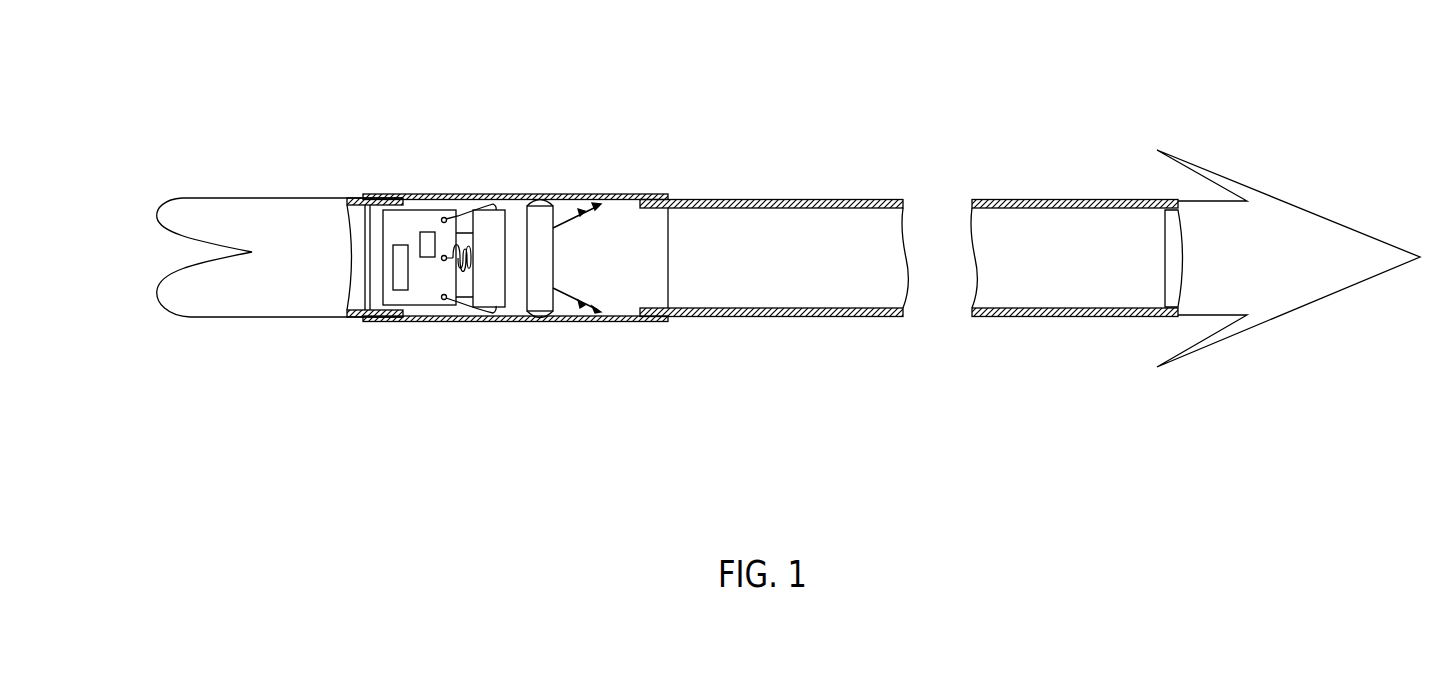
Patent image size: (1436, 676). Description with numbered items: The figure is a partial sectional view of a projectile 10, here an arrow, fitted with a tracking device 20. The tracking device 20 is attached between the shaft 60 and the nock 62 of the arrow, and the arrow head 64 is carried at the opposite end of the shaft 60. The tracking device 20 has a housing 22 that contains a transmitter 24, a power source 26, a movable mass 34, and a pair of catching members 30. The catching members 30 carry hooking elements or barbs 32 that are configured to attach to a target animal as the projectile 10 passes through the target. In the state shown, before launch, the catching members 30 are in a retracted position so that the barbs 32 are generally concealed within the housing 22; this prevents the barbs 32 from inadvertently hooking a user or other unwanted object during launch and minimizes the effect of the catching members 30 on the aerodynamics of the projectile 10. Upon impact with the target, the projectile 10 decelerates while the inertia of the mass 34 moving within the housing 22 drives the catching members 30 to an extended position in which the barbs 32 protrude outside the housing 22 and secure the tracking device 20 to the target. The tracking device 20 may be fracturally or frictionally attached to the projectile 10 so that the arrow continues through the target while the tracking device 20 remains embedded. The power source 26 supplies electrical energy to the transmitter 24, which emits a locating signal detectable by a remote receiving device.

The projectile 10 is at (528, 52).
The tracking device 20 is at (440, 342).
The housing 22 is at (448, 195).
The transmitter 24 is at (392, 297).
The power source 26 is at (479, 292).
The catching members 30 is at (566, 205).
The barbs 32 is at (598, 203).
The mass 34 is at (535, 222).
The shaft 60 is at (776, 199).
The nock 62 is at (247, 305).
The arrow head 64 is at (1283, 210).